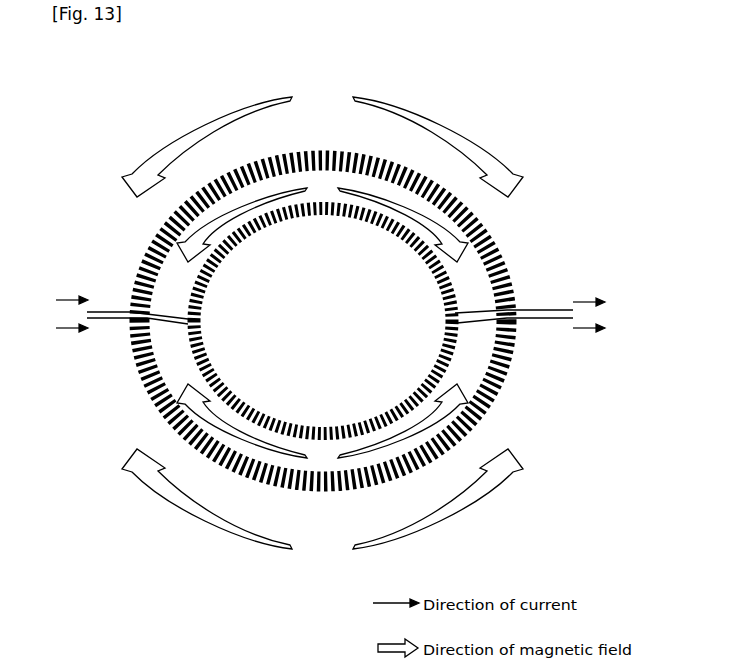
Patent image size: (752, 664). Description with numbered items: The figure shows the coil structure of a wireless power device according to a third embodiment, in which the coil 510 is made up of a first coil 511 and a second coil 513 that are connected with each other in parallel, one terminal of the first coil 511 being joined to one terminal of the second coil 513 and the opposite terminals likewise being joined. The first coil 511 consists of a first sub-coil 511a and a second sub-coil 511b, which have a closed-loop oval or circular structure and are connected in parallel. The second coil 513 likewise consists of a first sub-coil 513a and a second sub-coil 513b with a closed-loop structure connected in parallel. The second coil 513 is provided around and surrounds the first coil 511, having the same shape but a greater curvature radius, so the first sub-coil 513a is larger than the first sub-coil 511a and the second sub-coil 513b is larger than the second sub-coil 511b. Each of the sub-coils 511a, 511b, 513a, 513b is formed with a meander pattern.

The coil 510 is at (423, 320).
The first coil 511 is at (427, 311).
The first sub-coil 511a is at (448, 282).
The second sub-coil 511b is at (450, 352).
The second coil 513 is at (400, 320).
The first sub-coil 513a is at (525, 295).
The second sub-coil 513b is at (518, 335).